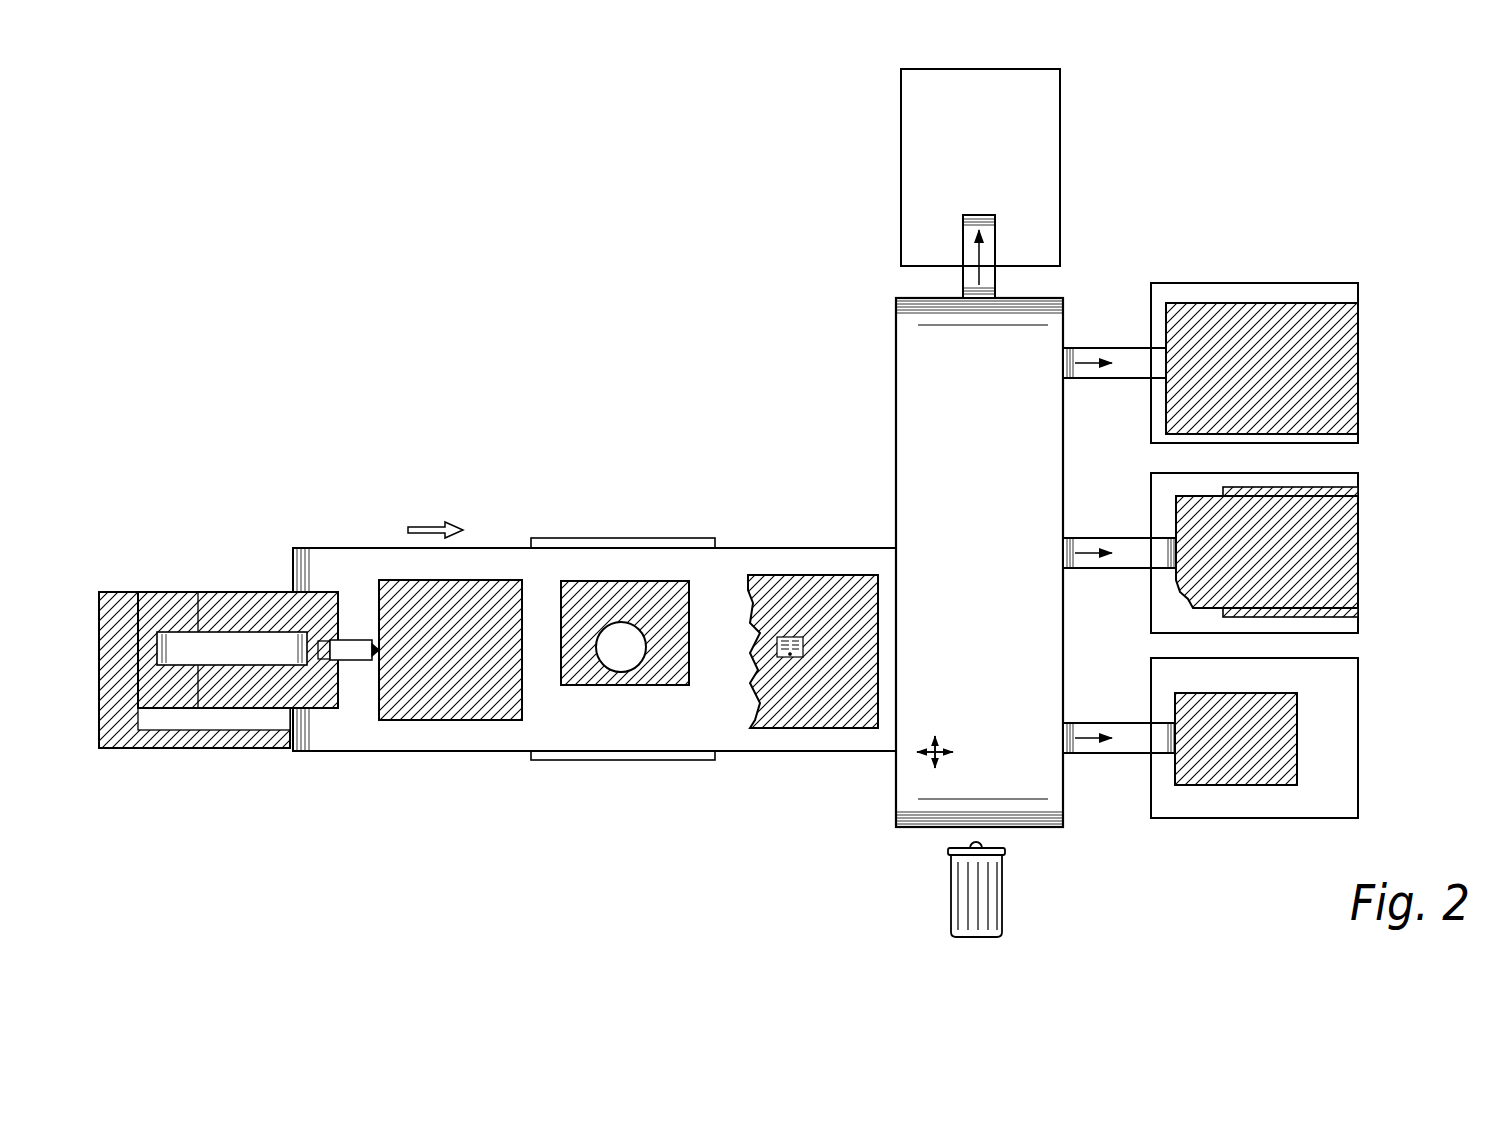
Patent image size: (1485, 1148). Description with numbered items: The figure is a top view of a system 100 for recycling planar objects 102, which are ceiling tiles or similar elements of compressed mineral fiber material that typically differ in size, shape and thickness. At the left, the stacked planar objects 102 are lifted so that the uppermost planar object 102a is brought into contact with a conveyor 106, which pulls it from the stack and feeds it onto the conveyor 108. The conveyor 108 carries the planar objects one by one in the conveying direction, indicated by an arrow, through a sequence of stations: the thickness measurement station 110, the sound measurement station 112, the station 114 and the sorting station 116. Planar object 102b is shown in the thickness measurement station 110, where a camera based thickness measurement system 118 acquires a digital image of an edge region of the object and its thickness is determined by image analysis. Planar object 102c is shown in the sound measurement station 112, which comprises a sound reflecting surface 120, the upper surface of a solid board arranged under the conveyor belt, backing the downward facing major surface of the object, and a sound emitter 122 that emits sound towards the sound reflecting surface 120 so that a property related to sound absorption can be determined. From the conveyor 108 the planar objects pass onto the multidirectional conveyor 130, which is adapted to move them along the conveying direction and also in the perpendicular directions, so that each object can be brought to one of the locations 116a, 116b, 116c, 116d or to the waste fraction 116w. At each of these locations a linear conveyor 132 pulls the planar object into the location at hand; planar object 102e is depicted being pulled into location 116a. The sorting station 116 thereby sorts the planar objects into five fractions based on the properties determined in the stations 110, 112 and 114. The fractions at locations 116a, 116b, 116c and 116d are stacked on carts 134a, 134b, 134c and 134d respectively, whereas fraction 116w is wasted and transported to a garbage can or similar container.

The system 100 is at (258, 118).
The planar objects 102 is at (218, 651).
The uppermost planar object 102a is at (238, 651).
The planar object 102b is at (435, 720).
The planar object 102c is at (601, 705).
The planar object 102e is at (1297, 700).
The conveyor 106 is at (187, 652).
The conveyor 108 is at (487, 548).
The thickness measurement station 110 is at (450, 604).
The sound measurement station 112 is at (601, 599).
The station 114 is at (762, 475).
The sorting station 116 is at (1106, 503).
The location 116a is at (1358, 720).
The location 116b is at (1358, 542).
The location 116c is at (1358, 362).
The location 116d is at (1060, 163).
The waste fraction 116w is at (1005, 898).
The camera based thickness measurement system 118 is at (350, 660).
The sound reflecting surface 120 is at (674, 540).
The sound emitter 122 is at (619, 660).
The multidirectional conveyor 130 is at (896, 378).
The linear conveyor 132 is at (963, 246).
The cart 134a is at (1302, 772).
The cart 134b is at (1302, 558).
The cart 134c is at (1302, 369).
The cart 134d is at (1060, 232).